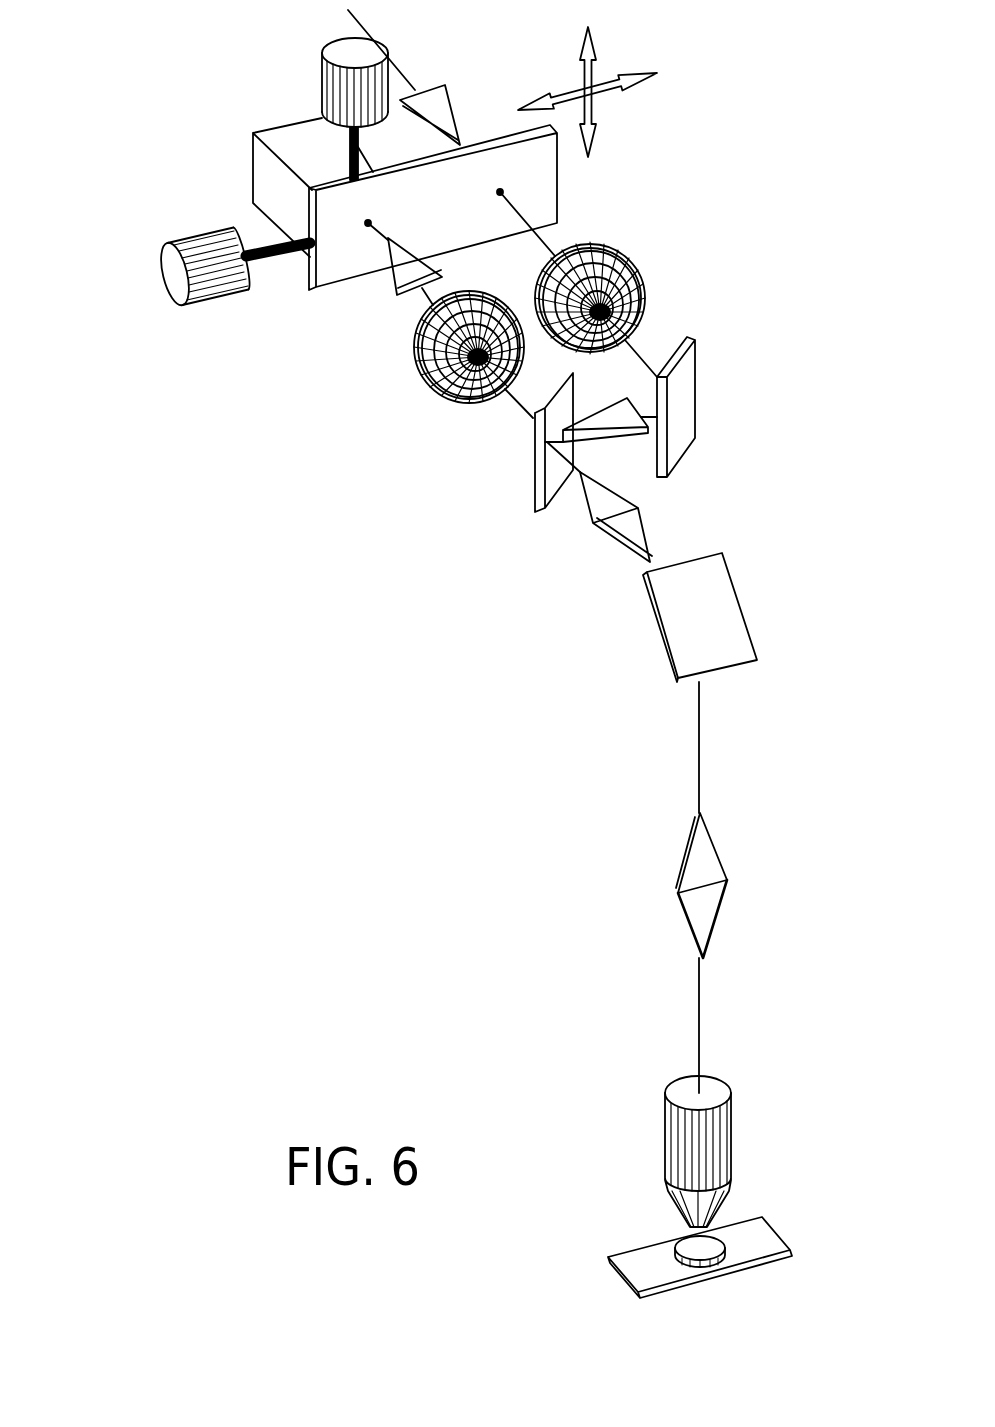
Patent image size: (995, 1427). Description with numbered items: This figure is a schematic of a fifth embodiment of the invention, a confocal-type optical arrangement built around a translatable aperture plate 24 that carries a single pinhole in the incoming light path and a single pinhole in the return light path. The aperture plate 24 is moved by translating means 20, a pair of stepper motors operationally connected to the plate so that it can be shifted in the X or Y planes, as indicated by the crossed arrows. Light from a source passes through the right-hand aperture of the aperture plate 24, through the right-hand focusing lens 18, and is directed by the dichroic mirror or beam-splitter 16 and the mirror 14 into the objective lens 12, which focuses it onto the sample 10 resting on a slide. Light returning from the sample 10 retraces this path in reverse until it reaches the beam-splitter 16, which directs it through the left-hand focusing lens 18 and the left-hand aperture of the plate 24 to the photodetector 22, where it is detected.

The sample 10 is at (772, 1213).
The objective lens 12 is at (731, 1073).
The mirror 14 is at (725, 550).
The dichroic mirror or beam-splitter 16 is at (537, 522).
The focusing lens 18 is at (545, 350).
The means for translating the aperture plate 20 is at (158, 290).
The photodetector 22 is at (240, 130).
The translatable aperture plate 24 is at (313, 290).